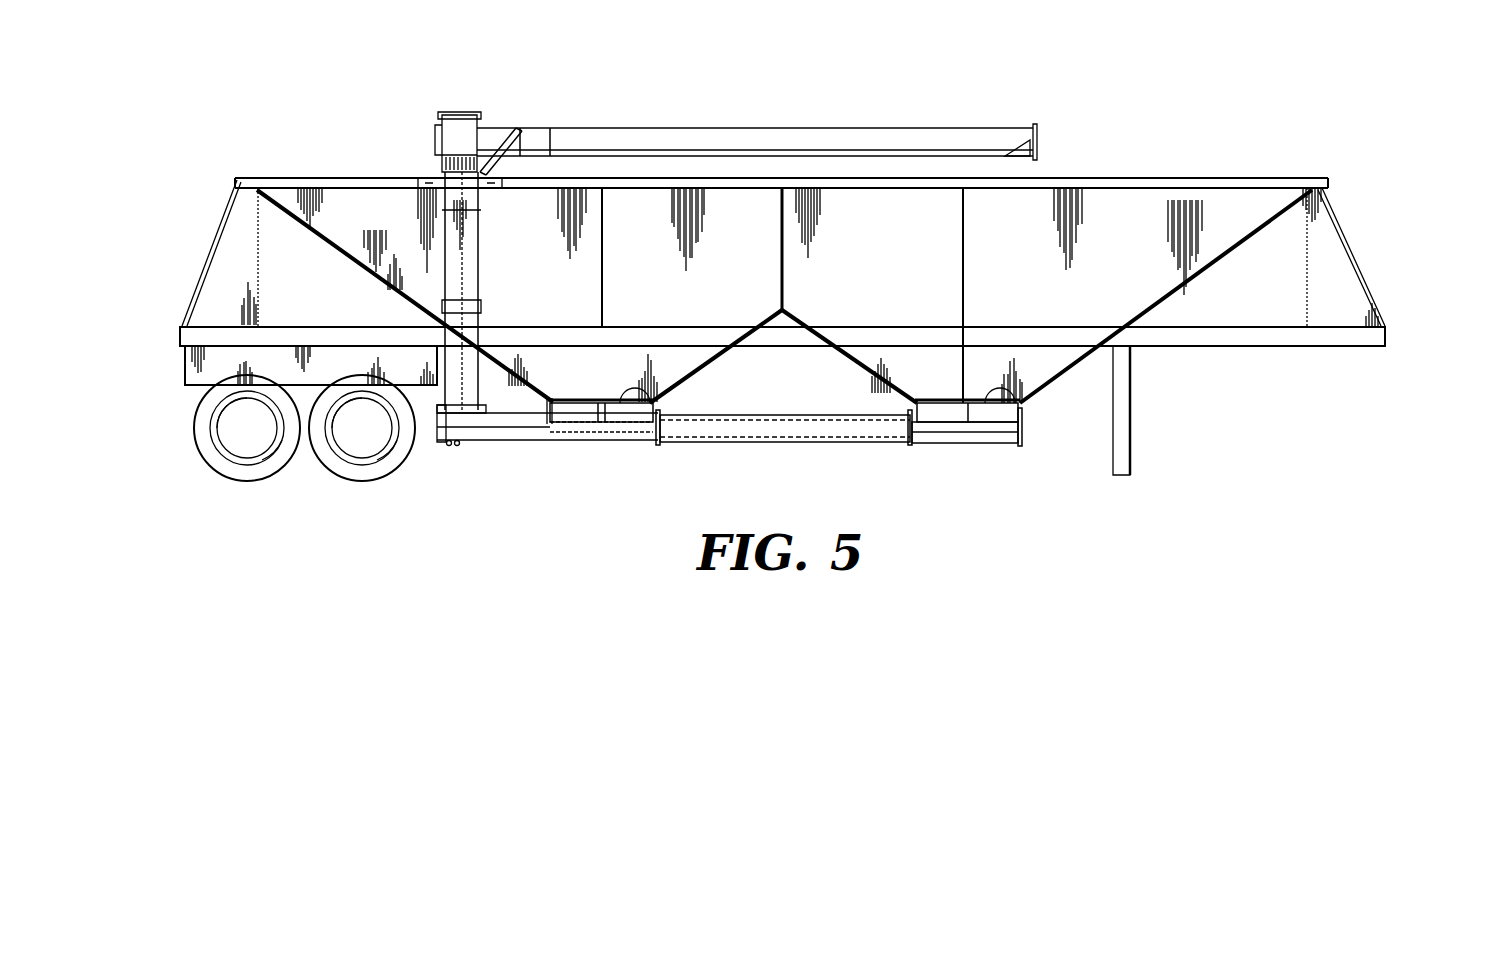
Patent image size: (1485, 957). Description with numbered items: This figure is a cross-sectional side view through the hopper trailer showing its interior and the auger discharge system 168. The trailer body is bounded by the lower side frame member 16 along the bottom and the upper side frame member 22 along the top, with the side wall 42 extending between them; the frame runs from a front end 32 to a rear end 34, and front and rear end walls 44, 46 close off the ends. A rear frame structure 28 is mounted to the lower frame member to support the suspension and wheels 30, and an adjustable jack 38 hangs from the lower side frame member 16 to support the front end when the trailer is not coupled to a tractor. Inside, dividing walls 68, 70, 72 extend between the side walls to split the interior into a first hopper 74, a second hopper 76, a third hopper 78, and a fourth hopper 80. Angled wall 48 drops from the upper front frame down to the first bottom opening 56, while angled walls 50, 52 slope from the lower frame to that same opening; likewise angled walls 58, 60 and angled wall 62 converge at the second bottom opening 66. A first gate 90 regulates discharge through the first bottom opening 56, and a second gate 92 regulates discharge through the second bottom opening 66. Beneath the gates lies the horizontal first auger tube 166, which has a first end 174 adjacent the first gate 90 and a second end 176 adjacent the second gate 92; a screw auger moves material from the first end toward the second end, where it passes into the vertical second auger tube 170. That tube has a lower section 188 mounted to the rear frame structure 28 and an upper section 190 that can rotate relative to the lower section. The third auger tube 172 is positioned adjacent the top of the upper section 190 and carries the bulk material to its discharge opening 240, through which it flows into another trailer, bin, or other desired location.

The auger discharge system 168 is at (568, 78).
The fourth hopper 80 is at (345, 205).
The second auger tube 170 is at (452, 240).
The upper section 190 is at (456, 226).
The third hopper 78 is at (647, 195).
The third auger tube 172 is at (796, 140).
The second hopper 76 is at (887, 195).
The discharge opening 240 is at (1028, 157).
The first hopper 74 is at (1167, 205).
The upper side frame member 22 is at (1260, 186).
The rear end wall 46 is at (214, 240).
The front end wall 44 is at (1350, 238).
The side wall 42 is at (995, 260).
The angled wall 48 is at (1222, 262).
The rear frame structure 28 is at (268, 362).
The lower section 188 is at (440, 345).
The dividing wall 72 is at (600, 300).
The dividing wall 70 is at (780, 210).
The dividing wall 68 is at (961, 236).
The angled wall 60 is at (563, 381).
The angled wall 58 is at (735, 365).
The angled wall 52 is at (852, 362).
The angled wall 50 is at (922, 377).
The second bottom opening 66 is at (652, 396).
The first bottom opening 56 is at (1022, 396).
The lower side frame member 16 is at (1256, 346).
The front end 32 is at (1392, 347).
The rear end 34 is at (165, 362).
The wheels 30 is at (312, 462).
The second end 176 is at (445, 445).
The angled wall 62 is at (540, 400).
The second gate 92 is at (582, 425).
The first auger tube 166 is at (803, 425).
The first gate 90 is at (992, 425).
The first end 174 is at (1021, 432).
The adjustable jack 38 is at (1121, 478).